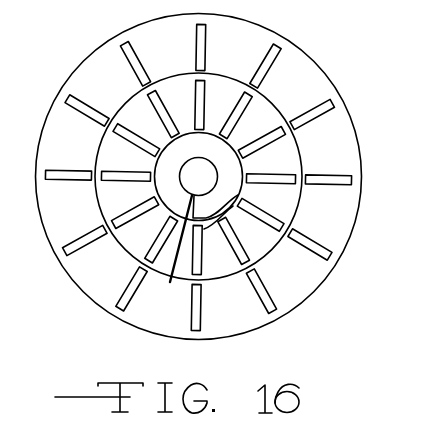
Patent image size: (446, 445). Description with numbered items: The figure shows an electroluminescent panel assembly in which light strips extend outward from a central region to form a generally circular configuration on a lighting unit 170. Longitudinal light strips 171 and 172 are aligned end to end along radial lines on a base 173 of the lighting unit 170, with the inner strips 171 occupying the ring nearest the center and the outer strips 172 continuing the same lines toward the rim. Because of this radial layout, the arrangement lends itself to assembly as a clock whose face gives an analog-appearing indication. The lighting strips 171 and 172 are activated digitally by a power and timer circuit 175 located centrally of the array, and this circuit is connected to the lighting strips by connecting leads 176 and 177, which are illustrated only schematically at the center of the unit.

The lighting unit 170 is at (257, 176).
The longitudinal light strips 171 is at (244, 165).
The longitudinal light strips 172 is at (201, 171).
The base 173 is at (227, 177).
The power and timer circuit 175 is at (133, 114).
The connecting lead 176 is at (240, 208).
The connecting lead 177 is at (147, 277).